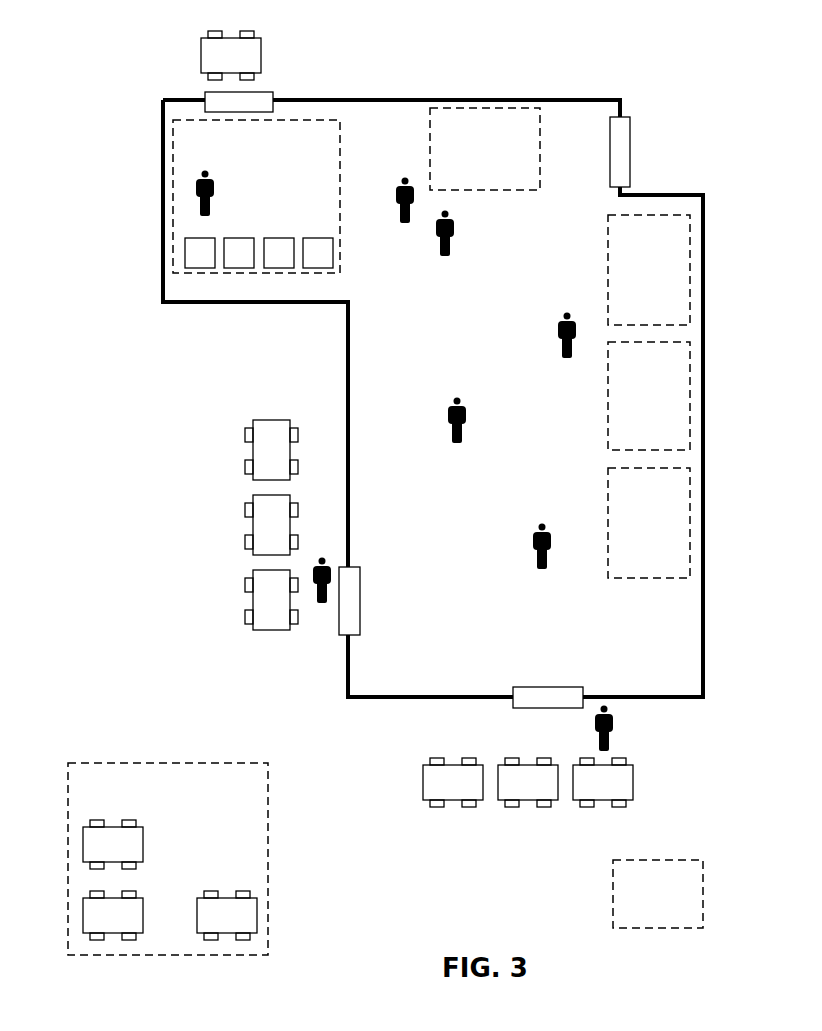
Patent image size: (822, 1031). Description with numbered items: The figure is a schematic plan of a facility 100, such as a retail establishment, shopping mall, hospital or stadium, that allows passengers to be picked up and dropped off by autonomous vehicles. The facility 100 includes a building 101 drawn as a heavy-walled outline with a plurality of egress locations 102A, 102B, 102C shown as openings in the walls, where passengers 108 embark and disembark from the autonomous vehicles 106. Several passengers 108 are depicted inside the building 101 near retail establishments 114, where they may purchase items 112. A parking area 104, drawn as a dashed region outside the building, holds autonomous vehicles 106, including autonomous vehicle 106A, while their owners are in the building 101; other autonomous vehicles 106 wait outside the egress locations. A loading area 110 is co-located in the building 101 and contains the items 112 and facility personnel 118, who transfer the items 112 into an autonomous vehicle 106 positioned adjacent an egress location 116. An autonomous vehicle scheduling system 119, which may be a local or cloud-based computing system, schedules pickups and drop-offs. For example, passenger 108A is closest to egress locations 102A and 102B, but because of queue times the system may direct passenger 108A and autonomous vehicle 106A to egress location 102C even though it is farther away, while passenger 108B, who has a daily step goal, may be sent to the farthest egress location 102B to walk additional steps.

The facility 100 is at (684, 68).
The building 101 is at (704, 425).
The egress location 102A is at (360, 635).
The egress location 102B is at (584, 687).
The egress location 102C is at (612, 187).
The parking area 104 is at (237, 760).
The autonomous vehicle 106 is at (203, 50).
The autonomous vehicle 106A is at (83, 840).
The passenger 108 is at (443, 258).
The passenger 108A is at (540, 572).
The passenger 108B is at (403, 223).
The loading area 110 is at (162, 210).
The items 112 is at (203, 269).
The retail establishment 114 is at (560, 343).
The egress location 116 is at (275, 93).
The facility personnel 118 is at (213, 203).
The autonomous vehicle scheduling system 119 is at (658, 894).